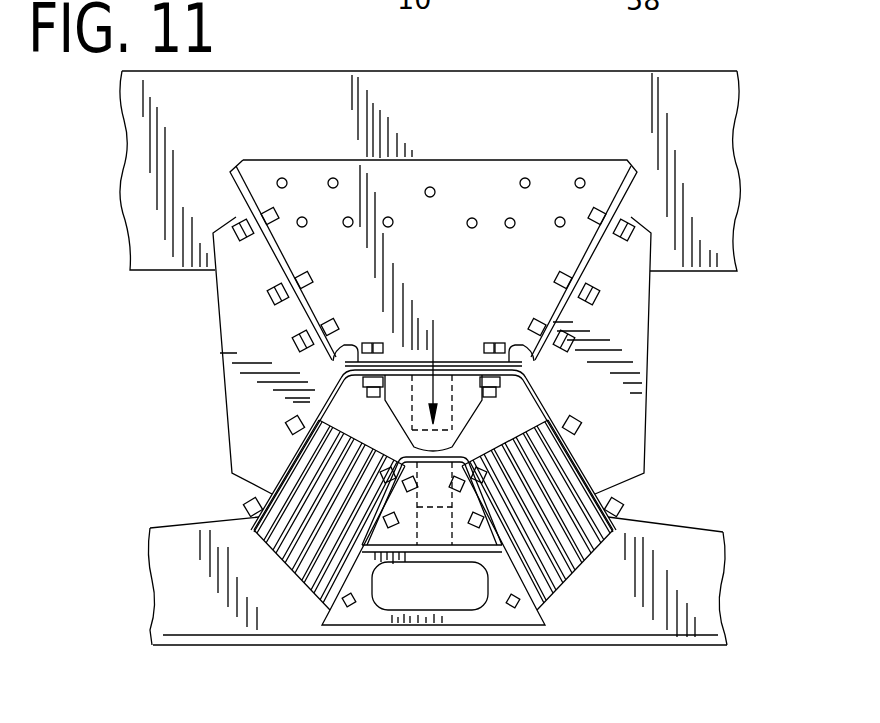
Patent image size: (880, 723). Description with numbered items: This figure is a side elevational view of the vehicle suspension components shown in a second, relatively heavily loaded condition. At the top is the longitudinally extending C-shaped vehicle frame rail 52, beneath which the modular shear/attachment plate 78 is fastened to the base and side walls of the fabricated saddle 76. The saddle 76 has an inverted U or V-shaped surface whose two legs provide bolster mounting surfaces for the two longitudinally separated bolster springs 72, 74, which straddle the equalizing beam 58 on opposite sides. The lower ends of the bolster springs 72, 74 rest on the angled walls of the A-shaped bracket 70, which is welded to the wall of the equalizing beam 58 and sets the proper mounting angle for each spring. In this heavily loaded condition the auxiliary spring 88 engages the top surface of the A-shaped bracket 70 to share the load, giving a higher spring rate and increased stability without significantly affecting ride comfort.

The vehicle frame rail 52 is at (703, 95).
The equalizing beam 58 is at (677, 543).
The A-shaped bracket 70 is at (350, 615).
The bolster spring 72 is at (297, 519).
The bolster spring 74 is at (577, 510).
The fabricated saddle 76 is at (631, 352).
The modular shear/attachment plate 78 is at (485, 186).
The auxiliary spring 88 is at (408, 410).